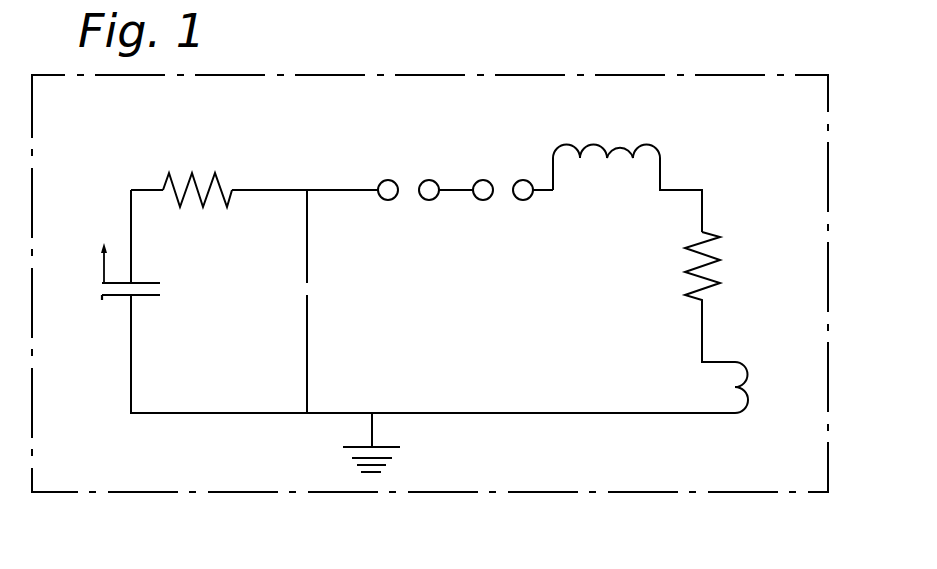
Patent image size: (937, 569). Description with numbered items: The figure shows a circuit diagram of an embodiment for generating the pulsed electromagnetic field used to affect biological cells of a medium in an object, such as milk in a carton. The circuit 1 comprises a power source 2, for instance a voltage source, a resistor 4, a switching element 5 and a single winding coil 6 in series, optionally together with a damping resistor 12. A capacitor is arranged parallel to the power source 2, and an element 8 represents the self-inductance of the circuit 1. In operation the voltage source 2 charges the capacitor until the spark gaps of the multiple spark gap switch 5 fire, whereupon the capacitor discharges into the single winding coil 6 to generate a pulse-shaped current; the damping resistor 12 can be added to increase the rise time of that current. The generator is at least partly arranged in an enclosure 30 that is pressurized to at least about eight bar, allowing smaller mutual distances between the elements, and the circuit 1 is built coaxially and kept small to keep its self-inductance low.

The circuit 1 is at (164, 447).
The power source 2 is at (102, 284).
The resistor 4 is at (219, 182).
The switching element 5 is at (456, 189).
The single winding coil 6 is at (746, 372).
The element representing the self-inductance 8 is at (621, 147).
The damping resistor 12 is at (712, 252).
The enclosure 30 is at (725, 492).